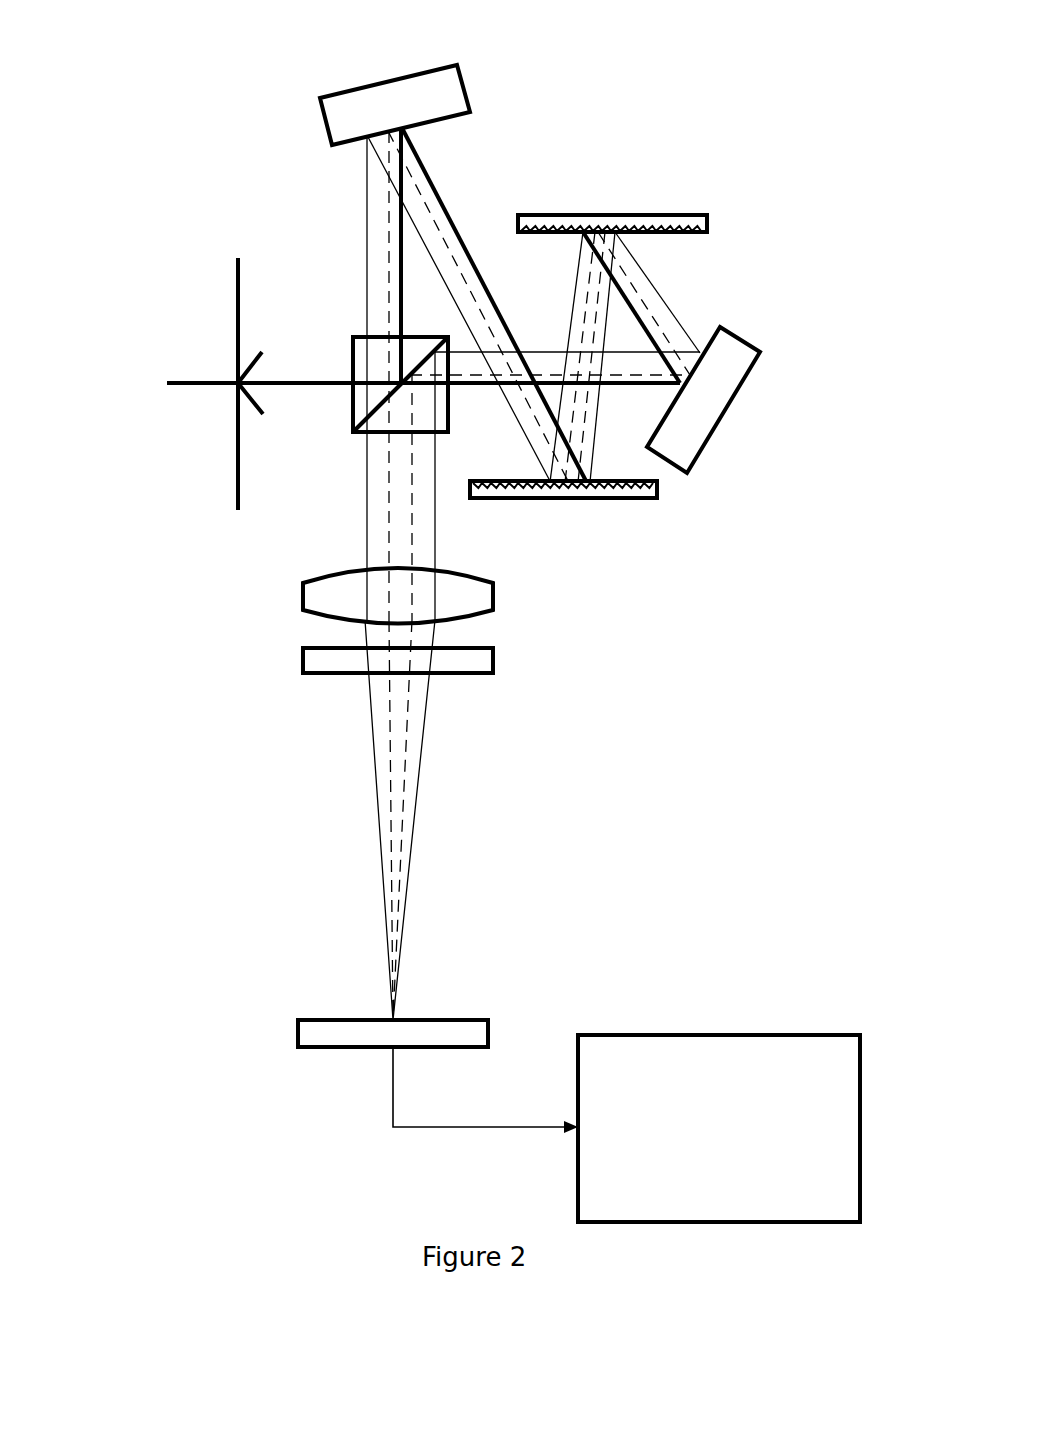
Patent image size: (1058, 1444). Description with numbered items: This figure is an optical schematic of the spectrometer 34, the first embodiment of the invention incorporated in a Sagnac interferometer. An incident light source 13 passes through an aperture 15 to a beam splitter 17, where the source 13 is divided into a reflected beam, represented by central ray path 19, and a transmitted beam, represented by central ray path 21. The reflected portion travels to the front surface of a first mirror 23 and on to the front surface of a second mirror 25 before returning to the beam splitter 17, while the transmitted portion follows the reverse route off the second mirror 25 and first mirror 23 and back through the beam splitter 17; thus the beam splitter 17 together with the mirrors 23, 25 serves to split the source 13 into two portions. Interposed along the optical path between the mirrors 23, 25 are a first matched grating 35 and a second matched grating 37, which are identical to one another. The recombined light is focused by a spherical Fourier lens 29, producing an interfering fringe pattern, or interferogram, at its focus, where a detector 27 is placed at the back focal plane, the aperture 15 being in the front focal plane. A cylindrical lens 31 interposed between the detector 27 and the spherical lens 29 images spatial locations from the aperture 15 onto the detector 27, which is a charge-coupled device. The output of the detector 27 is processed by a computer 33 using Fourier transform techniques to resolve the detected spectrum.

The incident light source 13 is at (193, 380).
The aperture 15 is at (242, 298).
The beam splitter 17 is at (353, 413).
The central ray path of reflected beam 19 is at (400, 275).
The central ray path of transmitted beam 21 is at (468, 387).
The first mirror 23 is at (368, 88).
The second mirror 25 is at (727, 403).
The detector 27 is at (298, 1028).
The spherical (Fourier) lens 29 is at (303, 596).
The cylindrical lens 31 is at (303, 657).
The computer 33 is at (720, 1035).
The spectrometer 34 is at (678, 168).
The first matched grating 35 is at (588, 215).
The second matched grating 37 is at (587, 498).